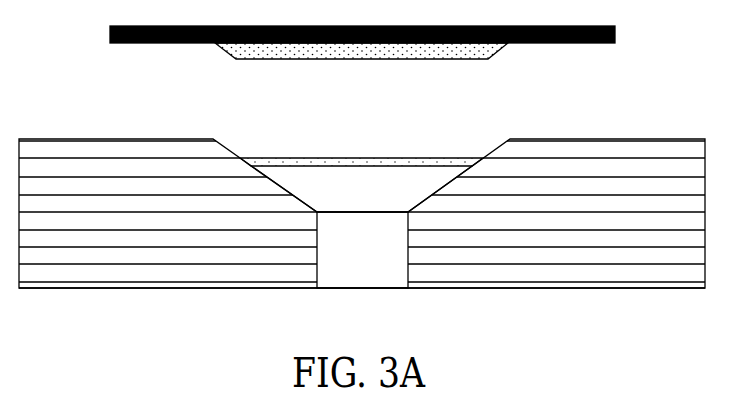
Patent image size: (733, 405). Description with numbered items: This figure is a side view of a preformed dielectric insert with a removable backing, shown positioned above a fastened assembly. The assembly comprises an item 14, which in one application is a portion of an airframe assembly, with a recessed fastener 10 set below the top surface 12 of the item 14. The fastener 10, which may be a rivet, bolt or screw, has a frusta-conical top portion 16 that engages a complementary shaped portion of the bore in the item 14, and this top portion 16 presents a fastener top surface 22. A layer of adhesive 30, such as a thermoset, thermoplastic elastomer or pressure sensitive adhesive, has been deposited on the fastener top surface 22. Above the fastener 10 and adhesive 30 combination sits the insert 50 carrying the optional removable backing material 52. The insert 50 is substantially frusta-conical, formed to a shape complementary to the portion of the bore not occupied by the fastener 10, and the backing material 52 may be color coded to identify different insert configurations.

The recessed fastener 10 is at (373, 258).
The top surface 12 is at (657, 138).
The item 14 is at (585, 288).
The top portion 16 is at (373, 201).
The fastener top surface 22 is at (305, 166).
The adhesive 30 is at (418, 157).
The insert 50 is at (488, 59).
The removable backing material 52 is at (615, 35).